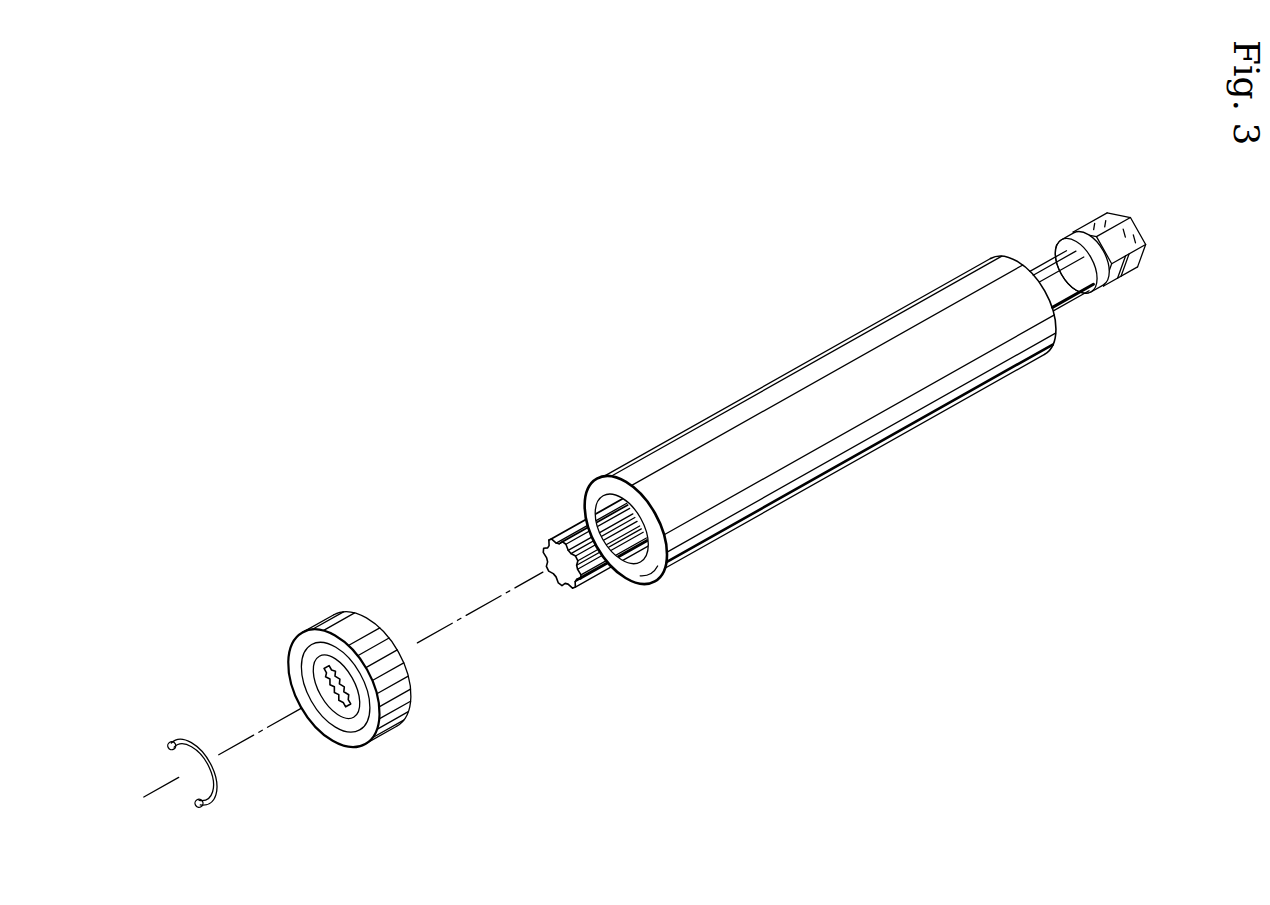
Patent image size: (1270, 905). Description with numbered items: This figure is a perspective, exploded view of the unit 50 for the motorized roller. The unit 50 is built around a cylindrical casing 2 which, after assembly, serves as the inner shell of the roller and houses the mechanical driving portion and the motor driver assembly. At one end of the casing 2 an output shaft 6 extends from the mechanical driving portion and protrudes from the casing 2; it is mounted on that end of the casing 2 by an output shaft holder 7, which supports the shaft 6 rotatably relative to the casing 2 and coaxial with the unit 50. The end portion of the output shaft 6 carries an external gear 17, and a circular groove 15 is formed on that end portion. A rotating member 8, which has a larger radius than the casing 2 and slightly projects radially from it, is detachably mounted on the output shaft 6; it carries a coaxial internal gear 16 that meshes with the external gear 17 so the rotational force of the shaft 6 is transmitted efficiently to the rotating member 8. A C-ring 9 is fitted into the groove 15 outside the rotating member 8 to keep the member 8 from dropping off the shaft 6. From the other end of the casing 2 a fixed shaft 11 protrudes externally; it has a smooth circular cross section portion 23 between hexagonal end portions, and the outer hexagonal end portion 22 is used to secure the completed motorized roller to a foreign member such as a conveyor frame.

The cylindrical casing 2 is at (892, 316).
The output shaft 6 is at (595, 512).
The output shaft holder 7 is at (624, 476).
The rotating member 8 is at (337, 618).
The C-ring 9 is at (180, 735).
The fixed shaft 11 is at (1105, 200).
The circular groove 15 is at (598, 577).
The internal gear 16 is at (342, 712).
The external gear 17 is at (622, 580).
The hexagonal end portion 22 is at (1116, 275).
The circular cross section portion 23 is at (1055, 266).
The unit 50 is at (847, 401).